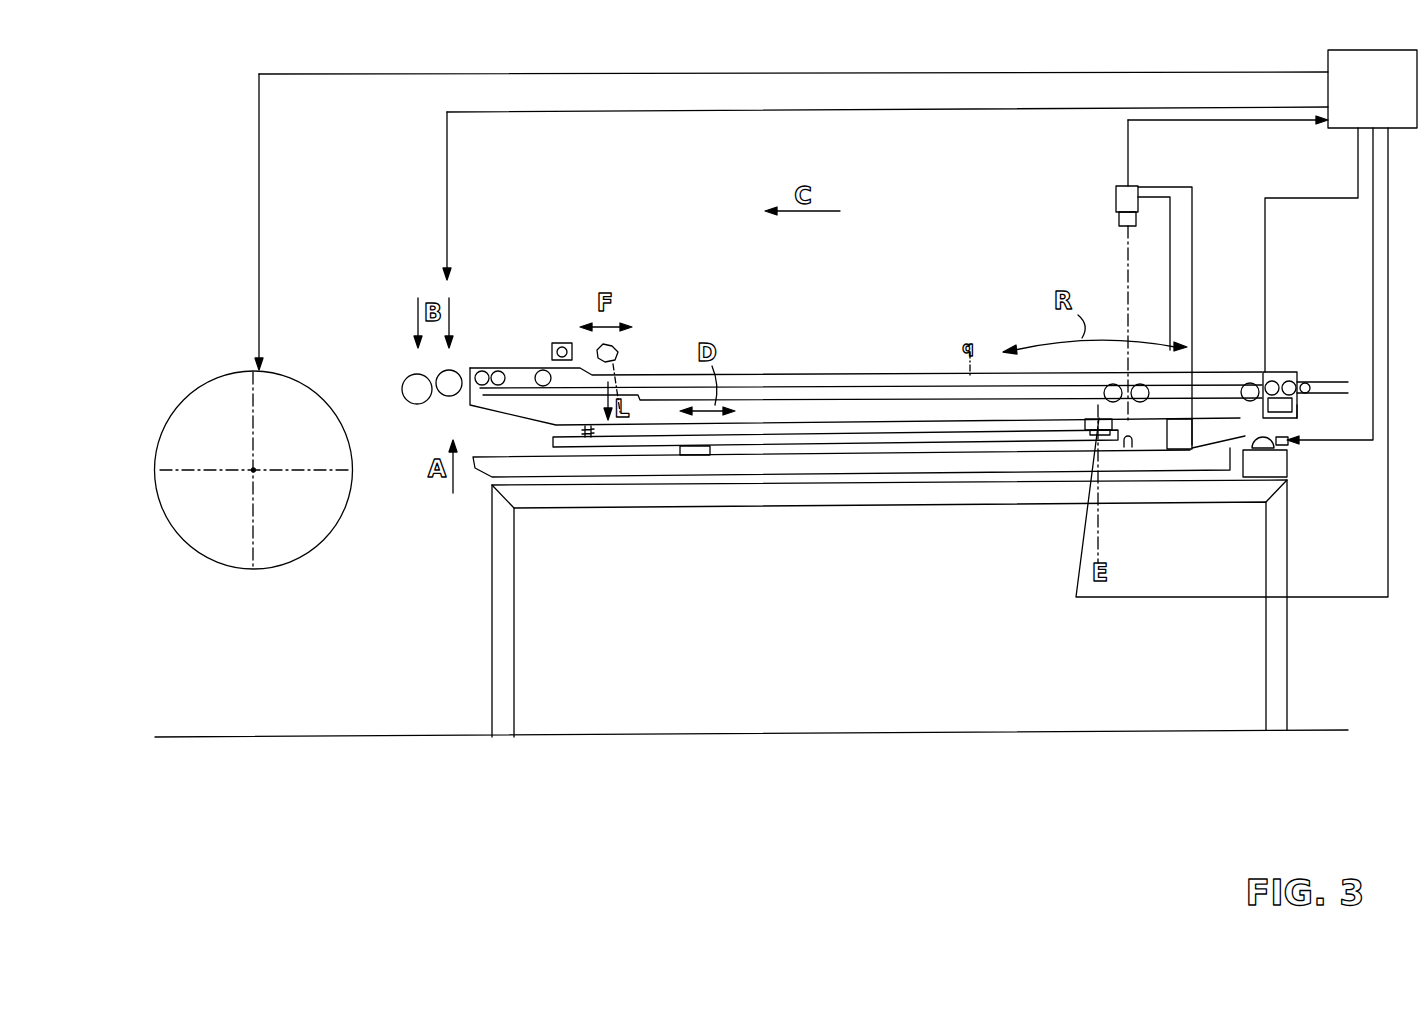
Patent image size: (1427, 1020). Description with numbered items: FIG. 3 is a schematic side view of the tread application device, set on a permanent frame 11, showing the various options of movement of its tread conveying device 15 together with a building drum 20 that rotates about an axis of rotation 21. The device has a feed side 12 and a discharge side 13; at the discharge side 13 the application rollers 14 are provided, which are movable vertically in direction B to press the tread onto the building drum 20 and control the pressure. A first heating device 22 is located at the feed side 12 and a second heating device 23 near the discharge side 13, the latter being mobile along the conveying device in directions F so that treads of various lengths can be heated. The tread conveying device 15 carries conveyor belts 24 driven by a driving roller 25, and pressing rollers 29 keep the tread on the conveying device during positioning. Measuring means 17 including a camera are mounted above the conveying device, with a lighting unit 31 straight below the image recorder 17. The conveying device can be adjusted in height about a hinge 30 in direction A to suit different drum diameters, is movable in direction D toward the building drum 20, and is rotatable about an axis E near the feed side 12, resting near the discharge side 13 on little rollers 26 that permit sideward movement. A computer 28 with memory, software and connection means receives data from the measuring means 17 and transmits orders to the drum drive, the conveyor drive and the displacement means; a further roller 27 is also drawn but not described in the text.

The permanent frame 11 is at (518, 633).
The feed side 12 is at (1256, 360).
The discharge side 13 is at (416, 252).
The application rollers 14 is at (426, 417).
The tread conveying device 15 is at (742, 332).
The measuring means 17 is at (1116, 195).
The building drum 20 is at (177, 447).
The axis of rotation 21 is at (253, 470).
The first heating device 22 is at (1297, 405).
The second heating device 23 is at (640, 345).
The conveyor belts 24 is at (880, 388).
The driving roller 25 is at (1280, 372).
The little rollers 26 is at (600, 432).
The roller 27 is at (469, 366).
The computer 28 is at (1400, 128).
The pressing rollers 29 is at (498, 368).
The hinge 30 is at (1253, 468).
The lighting unit 31 is at (1128, 437).